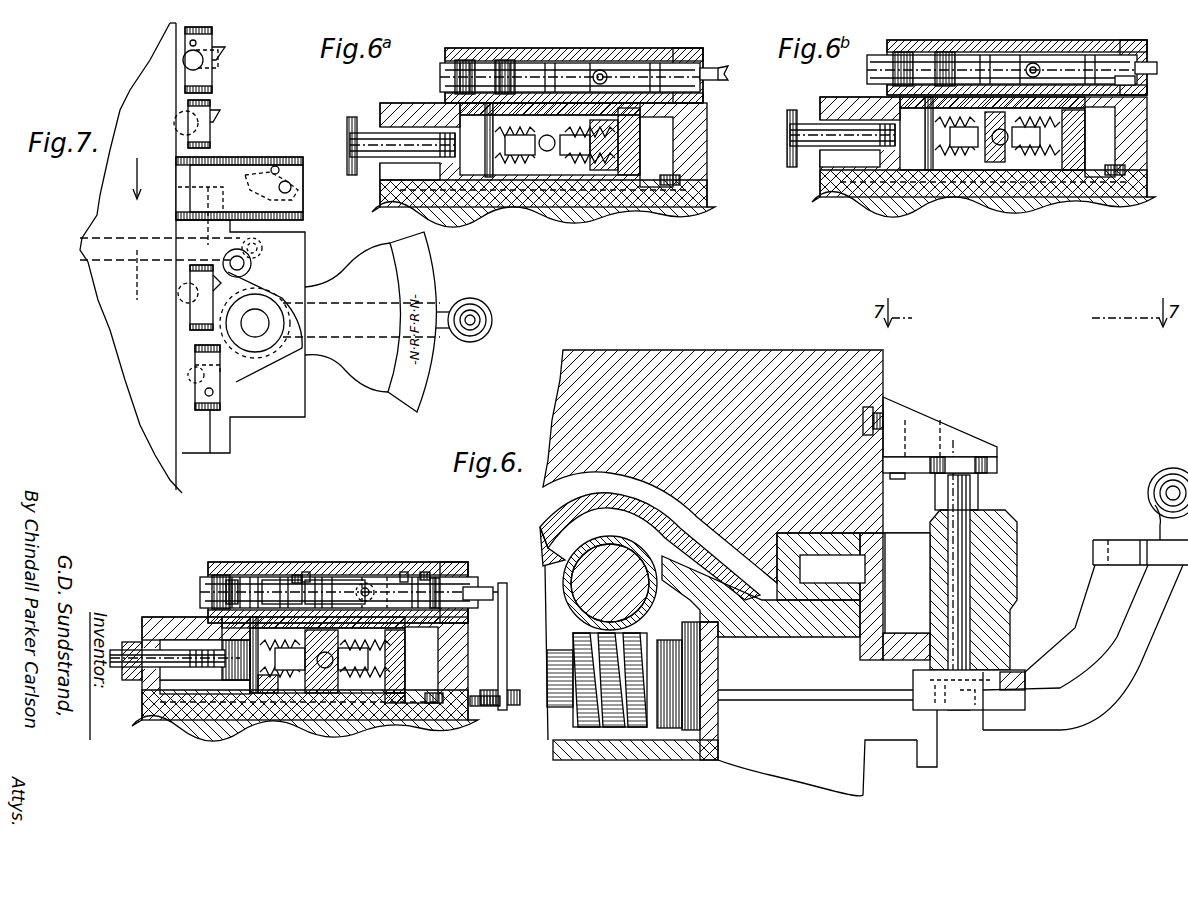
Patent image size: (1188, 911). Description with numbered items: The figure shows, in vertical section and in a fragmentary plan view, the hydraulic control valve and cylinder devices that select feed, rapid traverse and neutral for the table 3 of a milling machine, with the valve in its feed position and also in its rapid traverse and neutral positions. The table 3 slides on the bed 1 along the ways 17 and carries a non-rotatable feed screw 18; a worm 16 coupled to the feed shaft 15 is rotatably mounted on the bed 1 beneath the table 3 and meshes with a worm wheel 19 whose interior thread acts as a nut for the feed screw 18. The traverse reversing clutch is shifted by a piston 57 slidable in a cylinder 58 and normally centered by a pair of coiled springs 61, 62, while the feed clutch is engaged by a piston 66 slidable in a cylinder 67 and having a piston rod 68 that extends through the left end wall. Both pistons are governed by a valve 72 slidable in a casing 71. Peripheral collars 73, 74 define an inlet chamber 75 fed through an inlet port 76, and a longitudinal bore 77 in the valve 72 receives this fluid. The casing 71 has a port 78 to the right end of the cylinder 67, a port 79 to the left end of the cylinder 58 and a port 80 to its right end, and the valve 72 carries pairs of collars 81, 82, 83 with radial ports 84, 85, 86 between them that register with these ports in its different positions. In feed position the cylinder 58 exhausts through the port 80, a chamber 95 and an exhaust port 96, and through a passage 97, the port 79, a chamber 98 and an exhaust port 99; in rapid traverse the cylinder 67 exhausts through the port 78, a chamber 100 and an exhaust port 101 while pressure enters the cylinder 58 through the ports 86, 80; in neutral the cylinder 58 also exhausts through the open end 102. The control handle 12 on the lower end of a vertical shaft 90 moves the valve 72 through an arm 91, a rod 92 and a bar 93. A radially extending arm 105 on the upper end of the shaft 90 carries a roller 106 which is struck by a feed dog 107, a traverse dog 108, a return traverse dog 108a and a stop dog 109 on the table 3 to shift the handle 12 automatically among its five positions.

In FIG. 6, the bed 1 is at (880, 795).
In FIG. 7, the table 3 is at (120, 105).
In FIG. 6, the table 3 is at (685, 353).
In FIG. 7, the control handle 12 is at (445, 338).
In FIG. 6, the control handle 12 is at (1140, 620).
In FIG. 6, the feed shaft 15 is at (557, 693).
In FIG. 6, the worm 16 is at (575, 722).
In FIG. 6, the ways 17 is at (845, 585).
In FIG. 6, the feed screw 18 is at (640, 580).
In FIG. 6, the worm wheel 19 is at (735, 618).
In FIG. 6A, the piston 57 is at (560, 195).
In FIG. 6B, the piston 57 is at (1000, 190).
In FIG. 6, the piston 57 is at (336, 692).
In FIG. 6A, the cylinder 58 is at (612, 195).
In FIG. 6B, the cylinder 58 is at (1058, 190).
In FIG. 6, the cylinder 58 is at (388, 692).
In FIG. 6, the coiled spring 61 is at (264, 692).
In FIG. 6, the coiled spring 62 is at (395, 700).
In FIG. 6A, the piston 66 is at (478, 196).
In FIG. 6B, the piston 66 is at (912, 190).
In FIG. 6, the piston 66 is at (165, 690).
In FIG. 6A, the cylinder 67 is at (392, 103).
In FIG. 6B, the cylinder 67 is at (843, 97).
In FIG. 6, the cylinder 67 is at (152, 617).
In FIG. 6A, the piston rod 68 is at (364, 125).
In FIG. 6B, the piston rod 68 is at (803, 118).
In FIG. 6, the piston rod 68 is at (115, 650).
In FIG. 6A, the valve casing 71 is at (582, 55).
In FIG. 6B, the valve casing 71 is at (1042, 50).
In FIG. 6, the valve casing 71 is at (350, 577).
In FIG. 6A, the valve 72 is at (548, 62).
In FIG. 6B, the valve 72 is at (1022, 54).
In FIG. 6, the valve 72 is at (319, 575).
In FIG. 6, the peripheral collar 73 is at (334, 575).
In FIG. 6, the peripheral collar 74 is at (405, 570).
In FIG. 6, the inlet chamber 75 is at (371, 583).
In FIG. 6, the inlet port 76 is at (362, 575).
In FIG. 6, the bore 77 is at (387, 575).
In FIG. 6A, the port 78 is at (445, 104).
In FIG. 6, the port 78 is at (215, 618).
In FIG. 6, the port 79 is at (333, 592).
In FIG. 6A, the port 80 is at (656, 152).
In FIG. 6B, the port 80 is at (1110, 118).
In FIG. 6, the port 80 is at (421, 665).
In FIG. 6, the peripheral collars 81 is at (222, 575).
In FIG. 6, the peripheral collars 82 is at (284, 575).
In FIG. 6, the peripheral collars 83 is at (440, 575).
In FIG. 6, the radial port 84 is at (232, 590).
In FIG. 6, the radial port 85 is at (280, 592).
In FIG. 6A, the radial port 86 is at (682, 55).
In FIG. 6, the radial port 86 is at (472, 568).
In FIG. 7, the vertical shaft 90 is at (262, 330).
In FIG. 6, the vertical shaft 90 is at (962, 532).
In FIG. 7, the arm 91 is at (288, 258).
In FIG. 6, the arm 91 is at (970, 700).
In FIG. 7, the rod 92 is at (160, 269).
In FIG. 6, the rod 92 is at (795, 692).
In FIG. 6A, the bar 93 is at (720, 66).
In FIG. 6B, the bar 93 is at (1150, 66).
In FIG. 6, the bar 93 is at (508, 634).
In FIG. 6, the chamber 95 is at (415, 575).
In FIG. 6, the exhaust port 96 is at (426, 572).
In FIG. 6, the passage 97 is at (205, 654).
In FIG. 6, the chamber 98 is at (306, 570).
In FIG. 6, the exhaust port 99 is at (297, 572).
In FIG. 6A, the chamber 100 is at (482, 58).
In FIG. 6, the chamber 100 is at (236, 575).
In FIG. 6A, the exhaust port 101 is at (503, 60).
In FIG. 6, the exhaust port 101 is at (254, 575).
In FIG. 6B, the open end 102 is at (1148, 80).
In FIG. 7, the radially extending arm 105 is at (258, 302).
In FIG. 6, the radially extending arm 105 is at (935, 483).
In FIG. 7, the roller 106 is at (246, 266).
In FIG. 6, the roller 106 is at (935, 460).
In FIG. 7, the feed dog 107 is at (211, 118).
In FIG. 7, the traverse dog 108 is at (262, 178).
In FIG. 7, the return traverse dog 108a is at (216, 57).
In FIG. 7, the stop dog 109 is at (216, 384).